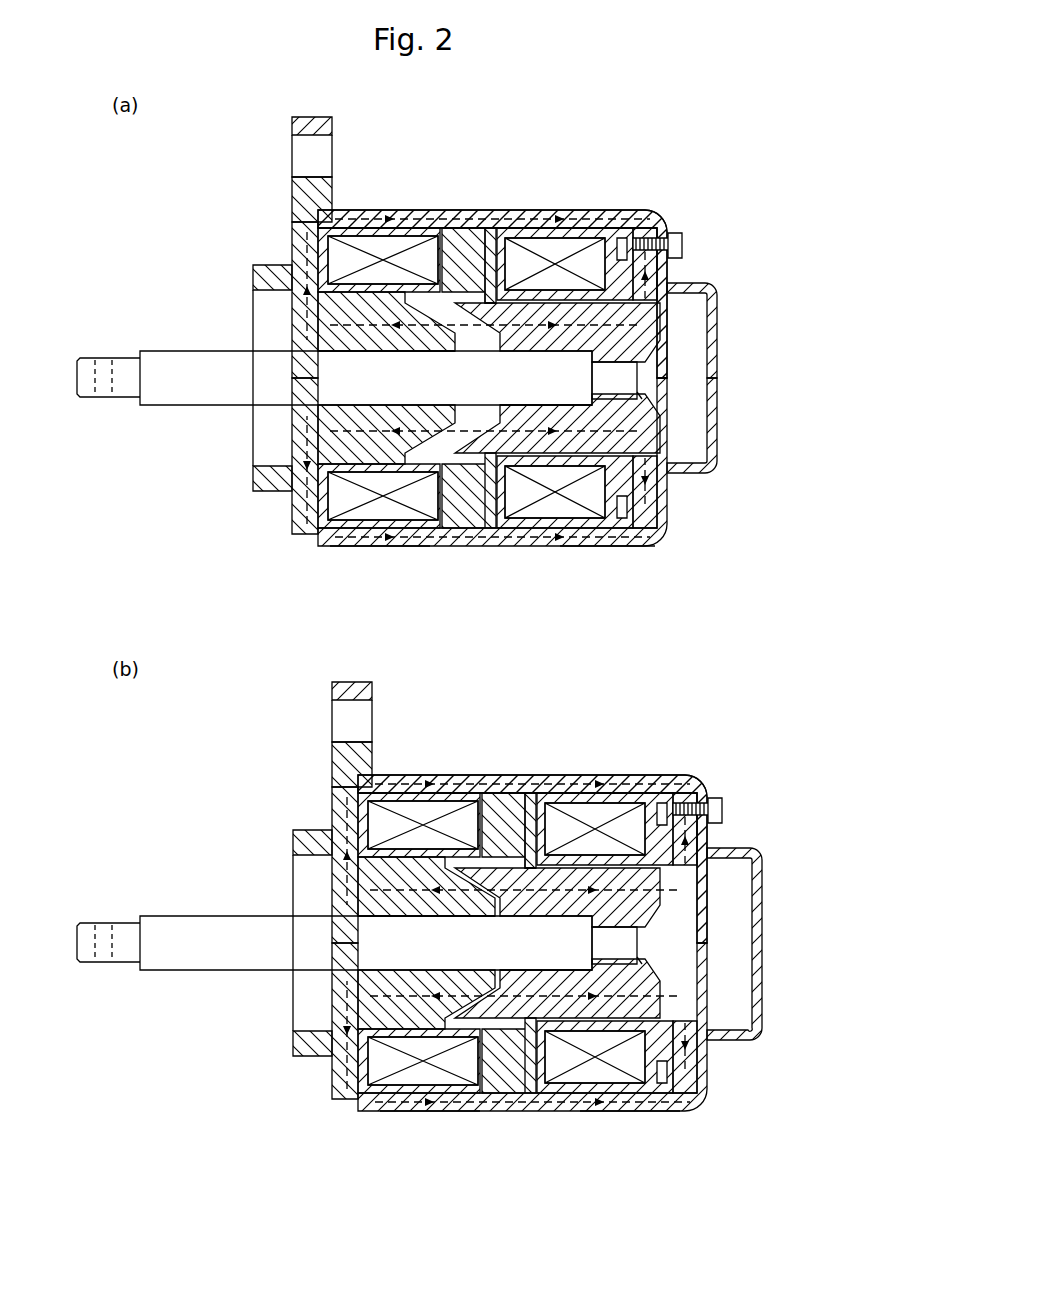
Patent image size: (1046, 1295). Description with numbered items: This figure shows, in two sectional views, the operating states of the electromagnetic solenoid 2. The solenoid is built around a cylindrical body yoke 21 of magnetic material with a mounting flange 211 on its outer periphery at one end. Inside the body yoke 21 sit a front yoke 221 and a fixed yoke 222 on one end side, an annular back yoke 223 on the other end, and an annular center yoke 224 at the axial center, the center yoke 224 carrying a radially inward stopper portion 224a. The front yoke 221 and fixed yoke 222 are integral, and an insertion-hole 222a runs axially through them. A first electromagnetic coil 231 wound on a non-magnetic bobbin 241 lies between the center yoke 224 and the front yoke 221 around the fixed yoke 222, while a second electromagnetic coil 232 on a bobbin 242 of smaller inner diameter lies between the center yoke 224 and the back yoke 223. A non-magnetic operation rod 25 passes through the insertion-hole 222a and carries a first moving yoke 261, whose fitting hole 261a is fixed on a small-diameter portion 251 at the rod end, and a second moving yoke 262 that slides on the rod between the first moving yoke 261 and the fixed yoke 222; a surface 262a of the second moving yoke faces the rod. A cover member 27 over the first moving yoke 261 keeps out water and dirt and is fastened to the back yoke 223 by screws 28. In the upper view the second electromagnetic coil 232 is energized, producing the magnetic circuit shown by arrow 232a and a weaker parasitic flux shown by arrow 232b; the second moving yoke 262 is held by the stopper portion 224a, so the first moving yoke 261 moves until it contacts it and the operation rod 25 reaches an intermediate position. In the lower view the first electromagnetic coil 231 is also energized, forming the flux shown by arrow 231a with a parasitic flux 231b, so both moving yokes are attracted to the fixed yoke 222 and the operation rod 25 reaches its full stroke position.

The electromagnetic solenoid 2 is at (500, 152).
The body yoke 21 is at (546, 212).
The mounting flange 211 is at (292, 124).
The front yoke 221 is at (293, 237).
The fixed yoke 222 is at (318, 322).
The insertion-hole 222a is at (362, 355).
The back yoke 223 is at (659, 276).
The center yoke 224 is at (462, 236).
The stopper portion 224a is at (488, 262).
The first electromagnetic coil 231 is at (372, 236).
The magnetic flux arrow 231a is at (452, 1116).
The parasitic flux arrow 231b is at (620, 1116).
The second electromagnetic coil 232 is at (572, 258).
The magnetic flux arrow 232a is at (597, 548).
The parasitic flux arrow 232b is at (370, 548).
The bobbin 241 is at (430, 240).
The bobbin 242 is at (615, 250).
The operation rod 25 is at (186, 405).
The small-diameter portion 251 is at (628, 372).
The first moving yoke 261 is at (640, 338).
The fitting hole 261a is at (640, 395).
The second moving yoke 262 is at (533, 440).
The rotor core end face 262a is at (505, 412).
The cover member 27 is at (718, 327).
The screws 28 is at (684, 244).